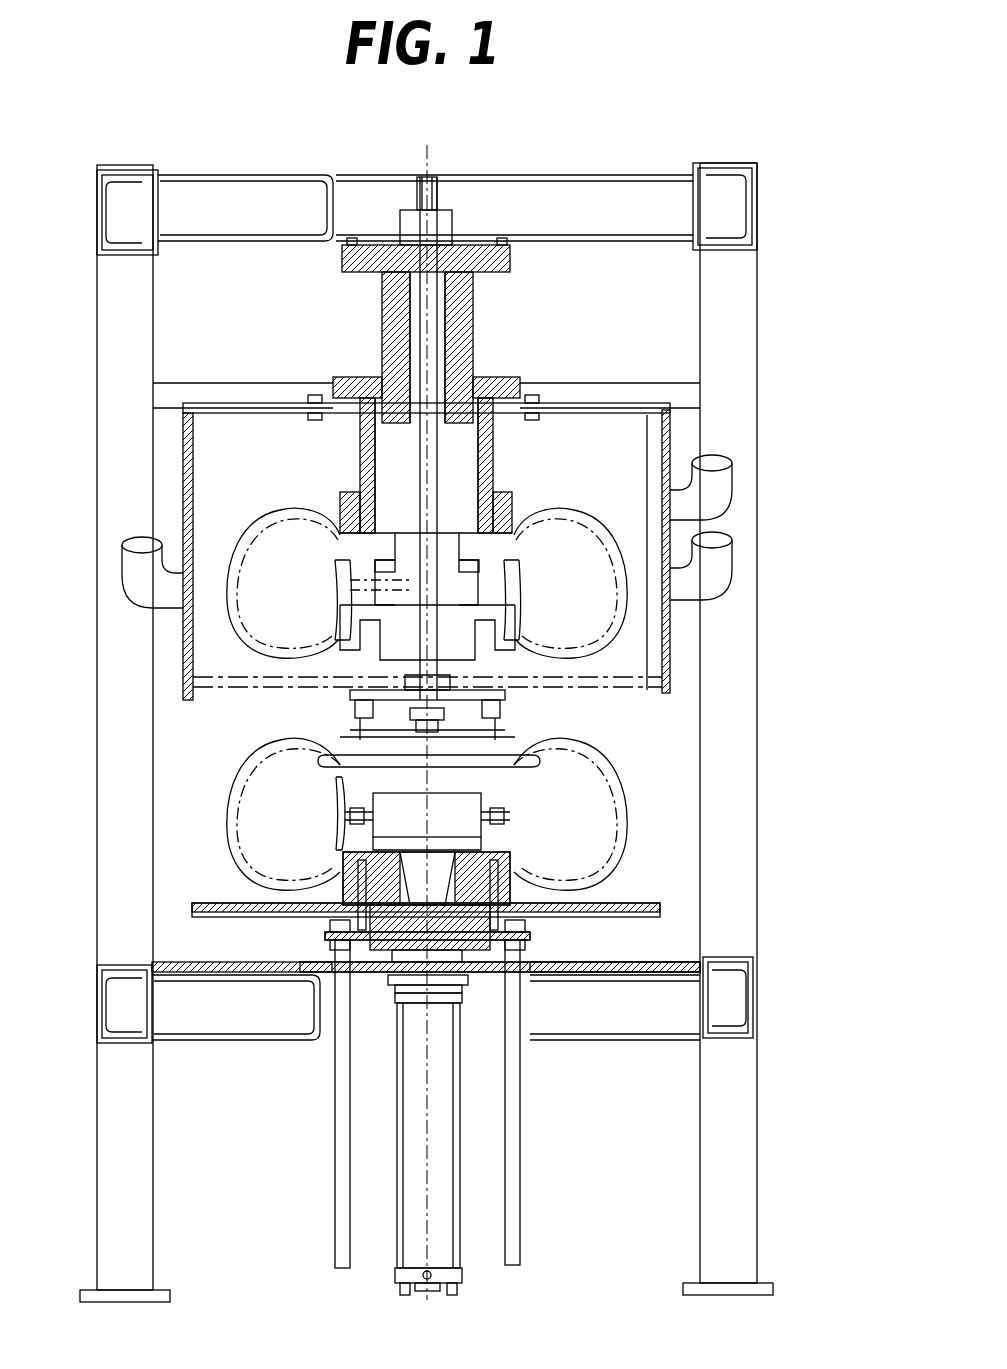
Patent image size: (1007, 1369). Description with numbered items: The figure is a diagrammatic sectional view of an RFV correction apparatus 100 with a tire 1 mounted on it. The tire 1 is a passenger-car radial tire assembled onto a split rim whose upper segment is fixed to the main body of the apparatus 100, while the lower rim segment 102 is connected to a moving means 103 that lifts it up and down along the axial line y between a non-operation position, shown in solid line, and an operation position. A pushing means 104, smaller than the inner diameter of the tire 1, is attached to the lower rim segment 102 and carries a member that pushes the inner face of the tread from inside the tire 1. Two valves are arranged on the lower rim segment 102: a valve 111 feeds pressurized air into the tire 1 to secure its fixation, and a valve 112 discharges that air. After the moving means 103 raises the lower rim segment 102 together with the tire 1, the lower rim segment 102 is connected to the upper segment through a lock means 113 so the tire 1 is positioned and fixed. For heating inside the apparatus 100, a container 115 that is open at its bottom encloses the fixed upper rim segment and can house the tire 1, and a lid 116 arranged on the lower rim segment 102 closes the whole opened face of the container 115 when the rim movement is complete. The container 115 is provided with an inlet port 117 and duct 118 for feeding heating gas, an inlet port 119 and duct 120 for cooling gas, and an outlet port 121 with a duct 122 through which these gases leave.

The RFV correction apparatus 100 is at (580, 163).
The tire 1 is at (228, 811).
The axial line y is at (430, 780).
The lower rim segment 102 is at (545, 915).
The moving means 103 is at (462, 1160).
The pushing means 104 is at (400, 800).
The valve 111 is at (315, 940).
The valve 112 is at (480, 975).
The lock means 113 is at (440, 635).
The container 115 is at (190, 455).
The lid 116 is at (222, 906).
The inlet port 117 is at (664, 575).
The duct 118 is at (710, 575).
The inlet port 119 is at (664, 500).
The duct 120 is at (722, 478).
The outlet port 121 is at (235, 530).
The duct 122 is at (142, 580).